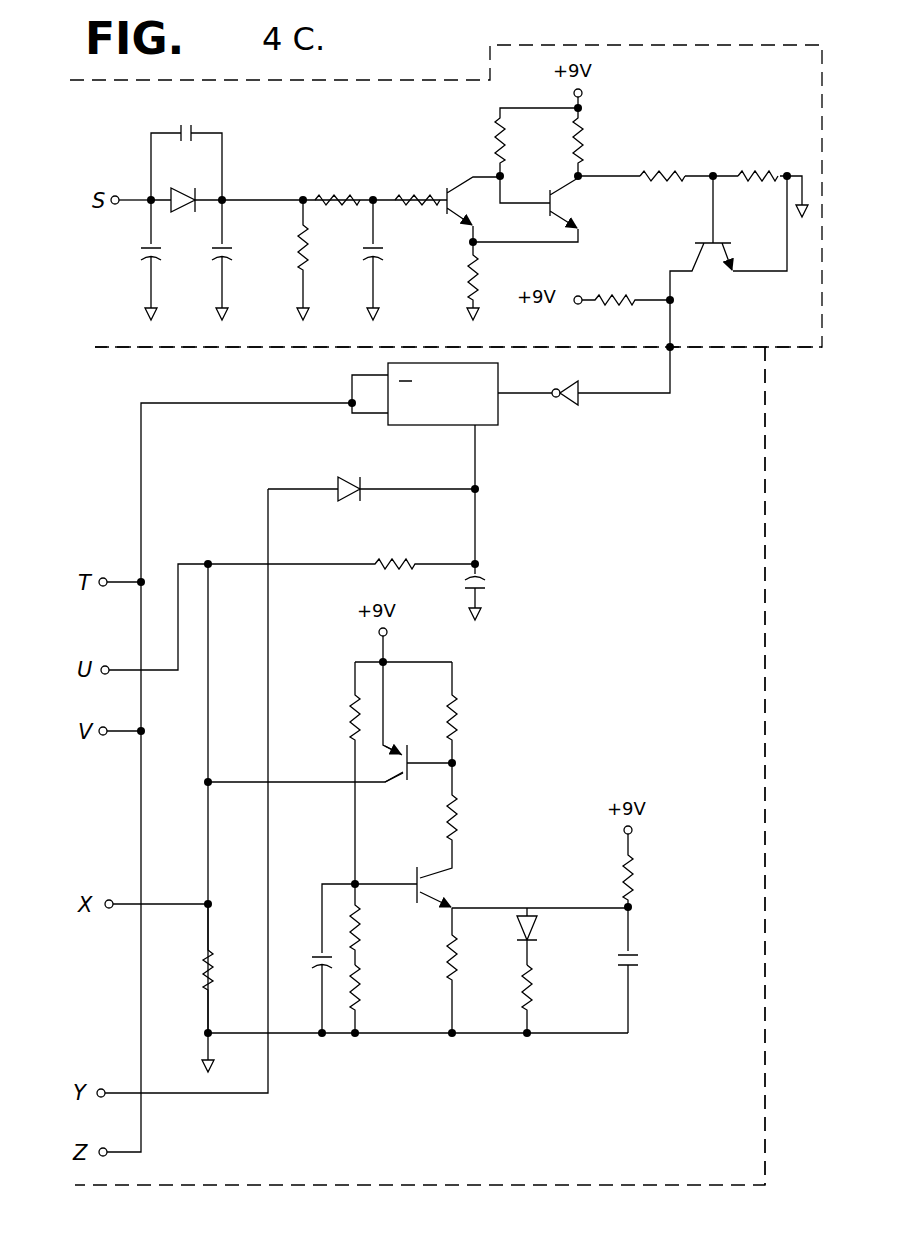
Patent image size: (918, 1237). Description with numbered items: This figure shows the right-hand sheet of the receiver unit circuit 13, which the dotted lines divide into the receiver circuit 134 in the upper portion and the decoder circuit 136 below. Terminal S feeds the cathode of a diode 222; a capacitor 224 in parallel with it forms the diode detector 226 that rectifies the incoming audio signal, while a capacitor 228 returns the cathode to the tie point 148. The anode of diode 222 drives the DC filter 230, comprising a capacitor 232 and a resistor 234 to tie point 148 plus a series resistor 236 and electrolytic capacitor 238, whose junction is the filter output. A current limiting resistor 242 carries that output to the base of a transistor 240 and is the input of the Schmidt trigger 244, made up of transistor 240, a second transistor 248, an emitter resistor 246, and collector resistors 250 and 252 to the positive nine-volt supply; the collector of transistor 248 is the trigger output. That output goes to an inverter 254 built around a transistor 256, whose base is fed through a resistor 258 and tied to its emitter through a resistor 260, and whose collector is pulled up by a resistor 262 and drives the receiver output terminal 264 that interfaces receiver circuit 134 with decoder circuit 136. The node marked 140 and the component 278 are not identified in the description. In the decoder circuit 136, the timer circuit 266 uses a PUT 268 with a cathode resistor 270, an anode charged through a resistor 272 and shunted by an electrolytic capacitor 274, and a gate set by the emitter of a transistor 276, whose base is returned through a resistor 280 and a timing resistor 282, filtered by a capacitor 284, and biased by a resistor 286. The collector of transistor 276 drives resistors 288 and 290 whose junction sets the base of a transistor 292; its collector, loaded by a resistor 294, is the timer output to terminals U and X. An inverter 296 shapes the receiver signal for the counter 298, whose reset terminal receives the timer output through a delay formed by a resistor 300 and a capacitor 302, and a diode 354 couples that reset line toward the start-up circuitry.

The receiver unit circuit 13 is at (662, 44).
The receiver circuit 134 is at (780, 94).
The decoder circuit 136 is at (653, 577).
The transistor output node 140 is at (763, 246).
The tie point 148 is at (156, 318).
The diode 222 is at (182, 212).
The capacitor 224 is at (190, 128).
The diode detector 226 is at (238, 160).
The capacitor 228 is at (143, 252).
The DC filter 230 is at (392, 176).
The capacitor 232 is at (232, 252).
The resistor 234 is at (298, 252).
The resistor 236 is at (330, 195).
The electrolytic capacitor 238 is at (383, 262).
The transistor 240 is at (458, 206).
The current limiting resistor 242 is at (420, 195).
The Schmidt trigger 244 is at (604, 142).
The resistor 246 is at (484, 276).
The transistor 248 is at (566, 190).
The resistor 250 is at (505, 148).
The resistor 252 is at (573, 143).
The inverter 254 is at (718, 170).
The transistor 256 is at (717, 238).
The resistor 258 is at (668, 183).
The resistor 260 is at (757, 170).
The resistor 262 is at (614, 298).
The receiver output terminal 264 is at (676, 345).
The timer circuit 266 is at (512, 768).
The PUT 268 is at (537, 931).
The resistor 270 is at (534, 988).
The resistor 272 is at (640, 870).
The electrolytic capacitor 274 is at (645, 960).
The transistor 276 is at (413, 872).
The resistor 278 is at (462, 968).
The resistor 280 is at (362, 926).
The timing resistor 282 is at (362, 1001).
The capacitor 284 is at (318, 958).
The resistor 286 is at (347, 716).
The resistor 288 is at (465, 815).
The resistor 290 is at (462, 705).
The transistor 292 is at (425, 735).
The resistor 294 is at (203, 985).
The inverter 296 is at (570, 405).
The counter 298 is at (490, 428).
The resistor 300 is at (396, 562).
The capacitor 302 is at (490, 586).
The diode 354 is at (350, 478).